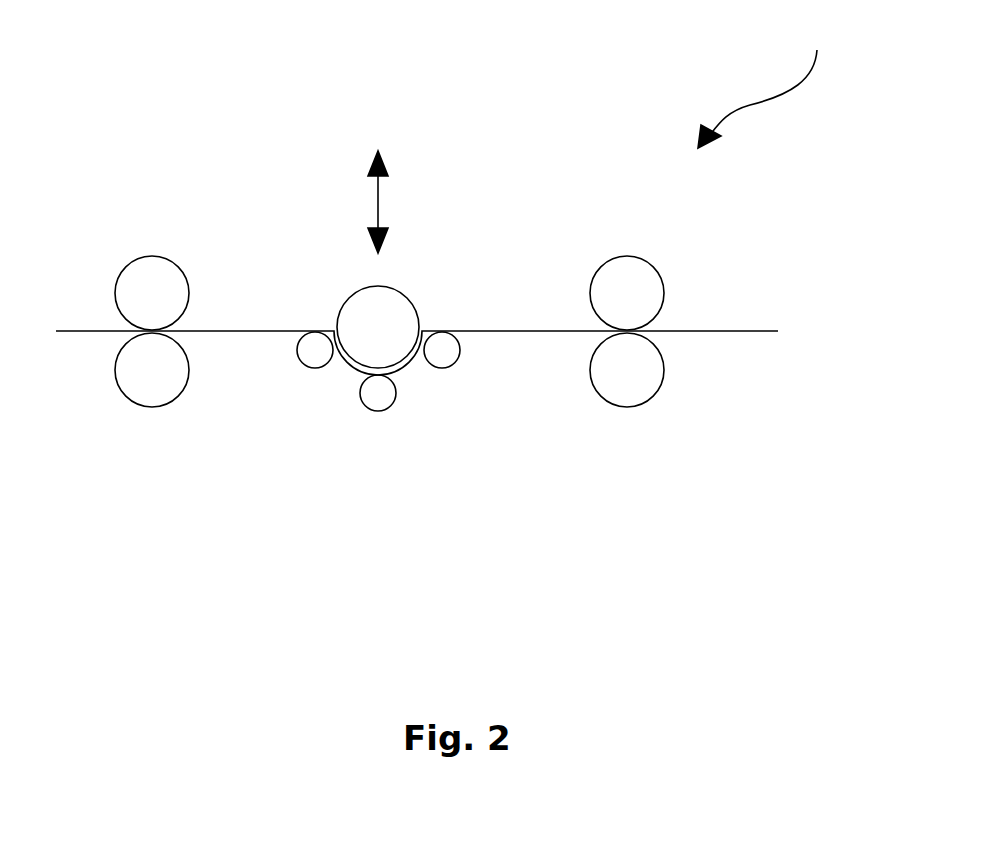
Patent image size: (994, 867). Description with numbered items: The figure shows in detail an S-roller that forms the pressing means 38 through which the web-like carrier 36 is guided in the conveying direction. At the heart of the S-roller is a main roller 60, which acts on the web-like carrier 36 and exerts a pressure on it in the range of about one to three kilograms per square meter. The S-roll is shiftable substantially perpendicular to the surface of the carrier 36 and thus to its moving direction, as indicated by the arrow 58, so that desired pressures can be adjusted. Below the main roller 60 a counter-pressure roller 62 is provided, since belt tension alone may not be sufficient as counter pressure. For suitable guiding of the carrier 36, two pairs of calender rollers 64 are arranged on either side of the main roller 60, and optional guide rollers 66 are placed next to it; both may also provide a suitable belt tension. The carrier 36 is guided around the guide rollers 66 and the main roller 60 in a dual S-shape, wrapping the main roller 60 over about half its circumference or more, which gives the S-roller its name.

The web-like carrier 36 is at (762, 331).
The pressing means 38 is at (769, 84).
The arrow 58 is at (378, 198).
The main roller 60 is at (350, 296).
The counter-pressure roller 62 is at (378, 412).
The calender rollers 64 is at (138, 258).
The guide rollers 66 is at (316, 370).